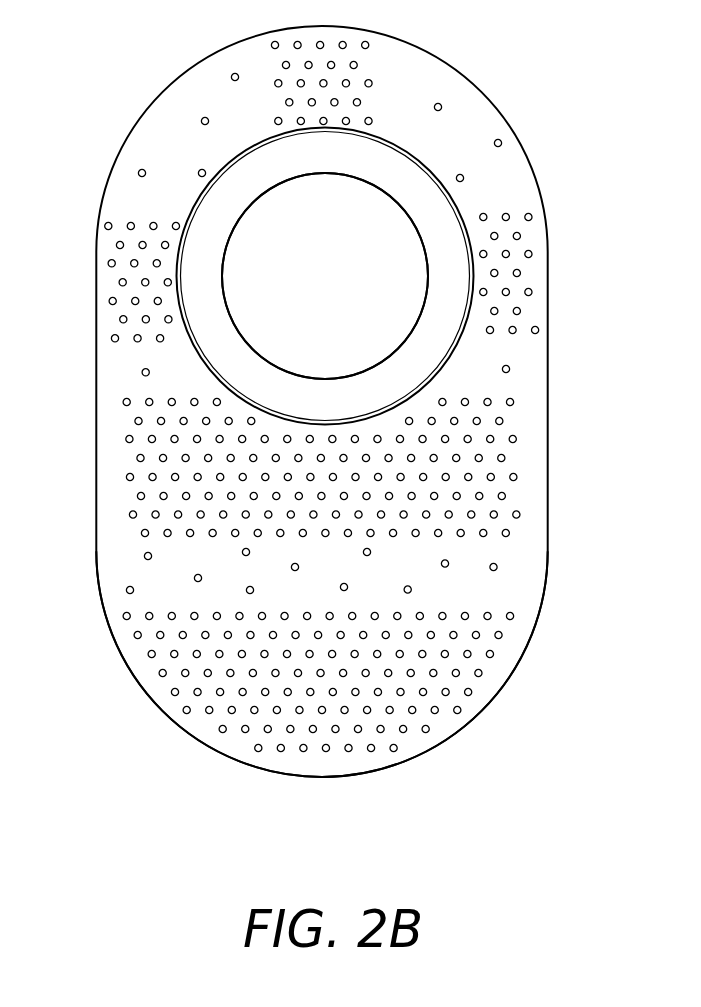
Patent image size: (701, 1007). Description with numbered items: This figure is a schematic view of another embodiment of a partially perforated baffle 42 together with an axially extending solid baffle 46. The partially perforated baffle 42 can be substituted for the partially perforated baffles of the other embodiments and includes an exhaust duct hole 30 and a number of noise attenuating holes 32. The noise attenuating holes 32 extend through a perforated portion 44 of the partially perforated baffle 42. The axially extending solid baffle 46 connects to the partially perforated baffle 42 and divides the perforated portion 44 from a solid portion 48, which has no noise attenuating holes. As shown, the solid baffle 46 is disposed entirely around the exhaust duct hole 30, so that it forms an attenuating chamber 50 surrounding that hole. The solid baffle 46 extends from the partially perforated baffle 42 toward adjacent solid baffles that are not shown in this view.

The exhaust duct hole 30 is at (263, 226).
The noise attenuating holes 32 is at (137, 497).
The partially perforated baffle 42 is at (572, 203).
The perforated portion 44 is at (509, 590).
The axially extending solid baffle 46 is at (392, 141).
The solid portion 48 is at (405, 185).
The attenuating chamber 50 is at (422, 358).